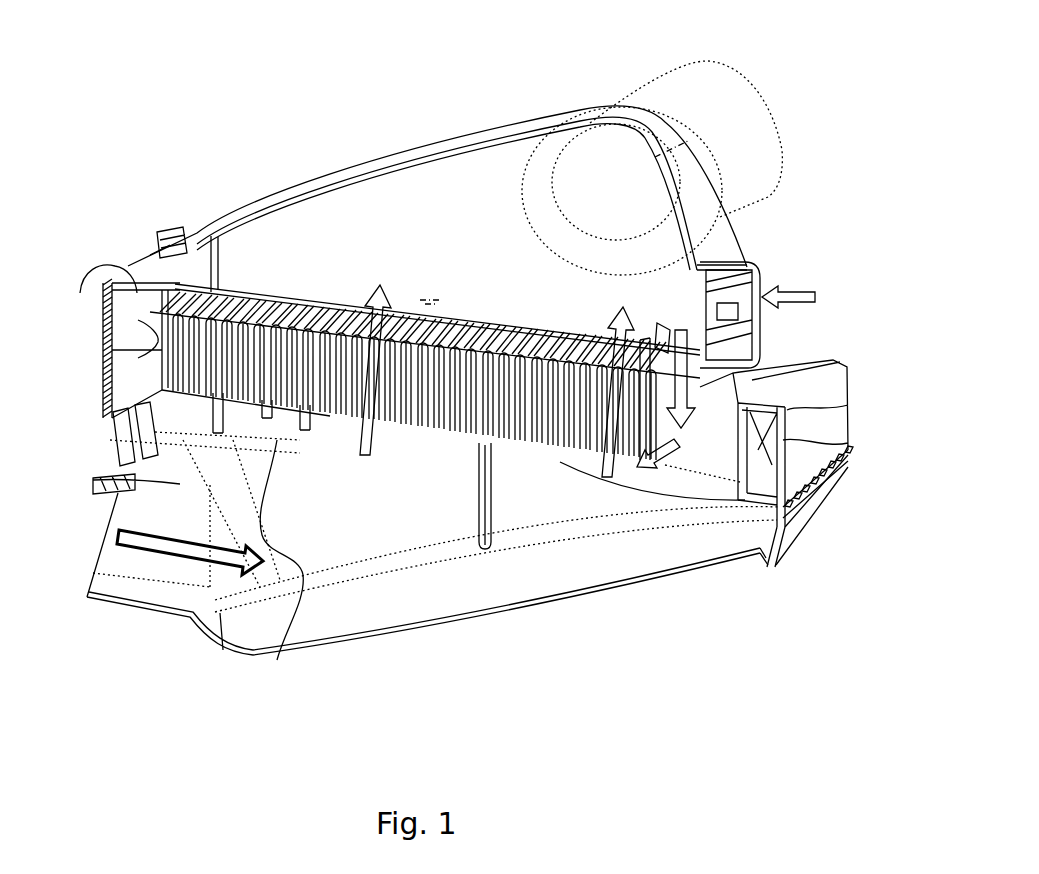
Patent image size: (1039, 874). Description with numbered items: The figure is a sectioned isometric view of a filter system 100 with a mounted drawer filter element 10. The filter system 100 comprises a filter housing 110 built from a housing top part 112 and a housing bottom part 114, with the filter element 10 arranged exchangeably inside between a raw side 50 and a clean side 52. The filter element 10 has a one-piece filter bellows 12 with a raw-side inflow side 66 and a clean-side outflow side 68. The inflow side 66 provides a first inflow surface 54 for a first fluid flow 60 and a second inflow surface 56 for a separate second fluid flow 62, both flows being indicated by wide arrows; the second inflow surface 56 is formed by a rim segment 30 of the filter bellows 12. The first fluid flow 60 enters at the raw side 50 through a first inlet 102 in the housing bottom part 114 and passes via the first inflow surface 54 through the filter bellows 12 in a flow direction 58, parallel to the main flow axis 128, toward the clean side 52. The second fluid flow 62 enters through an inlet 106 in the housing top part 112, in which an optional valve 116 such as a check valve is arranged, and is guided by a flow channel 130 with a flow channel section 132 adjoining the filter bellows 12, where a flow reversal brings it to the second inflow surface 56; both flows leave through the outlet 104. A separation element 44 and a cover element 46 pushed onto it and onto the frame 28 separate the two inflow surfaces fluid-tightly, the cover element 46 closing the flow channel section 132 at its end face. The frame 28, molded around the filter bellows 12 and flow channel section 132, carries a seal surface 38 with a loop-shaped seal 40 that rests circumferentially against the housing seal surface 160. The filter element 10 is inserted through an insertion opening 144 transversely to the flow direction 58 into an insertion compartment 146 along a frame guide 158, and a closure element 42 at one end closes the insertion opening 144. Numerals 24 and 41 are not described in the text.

The filter system 100 is at (320, 92).
The filter element 10 is at (273, 287).
The filter bellows 12 is at (160, 350).
The partition wall 24 is at (518, 457).
The frame 28 is at (781, 527).
The rim segment 30 is at (633, 335).
The seal surface 38 is at (847, 462).
The seal 40 is at (135, 300).
The side wall 41 is at (113, 325).
The closure element 42 is at (165, 232).
The separation element 44 is at (560, 466).
The cover element 46 is at (712, 492).
The raw side 50 is at (454, 511).
The clean side 52 is at (383, 257).
The first inflow surface 54 is at (343, 440).
The second inflow surface 56 is at (585, 466).
The flow direction 58 is at (470, 268).
The first fluid flow 60 is at (370, 464).
The second fluid flow 62 is at (617, 470).
The inflow side 66 is at (322, 425).
The outflow side 68 is at (302, 300).
The first inlet 102 is at (106, 548).
The outlet 104 is at (782, 135).
The inlet 106 is at (742, 265).
The filter housing 110 is at (263, 193).
The housing top part 112 is at (500, 127).
The housing bottom part 114 is at (363, 637).
The valve 116 is at (766, 290).
The main flow axis 128 is at (432, 290).
The flow channel 130 is at (750, 473).
The flow channel section 132 is at (747, 366).
The insertion opening 144 is at (157, 381).
The insertion compartment 146 is at (192, 468).
The frame guide 158 is at (298, 418).
The housing seal surface 160 is at (128, 283).